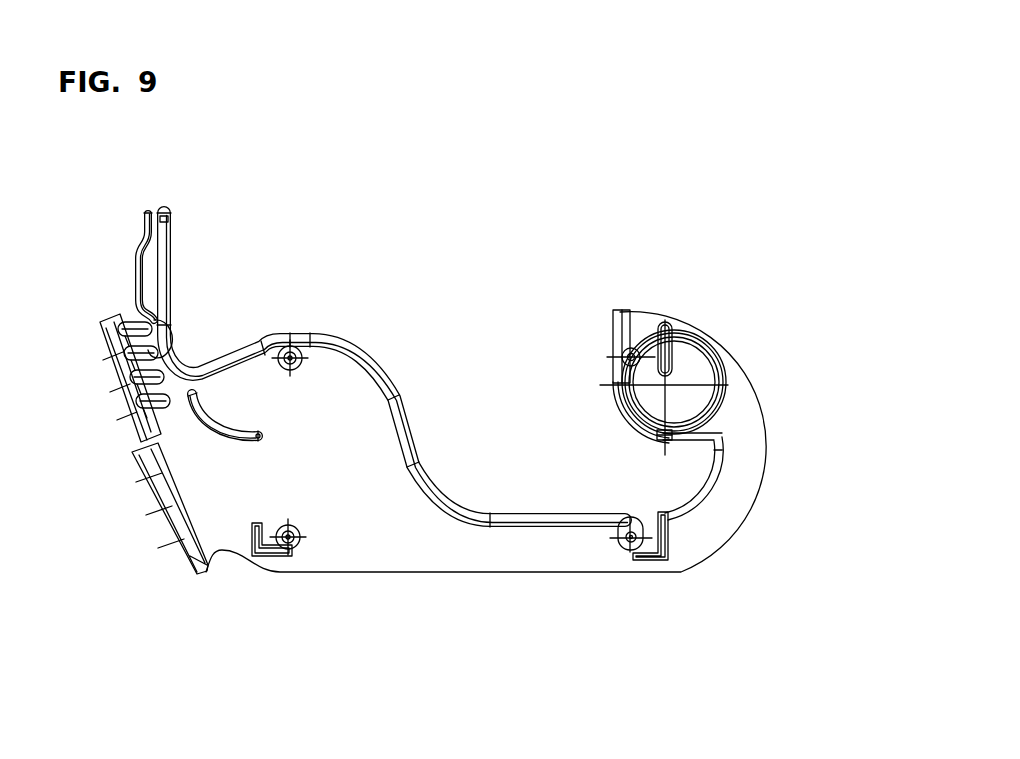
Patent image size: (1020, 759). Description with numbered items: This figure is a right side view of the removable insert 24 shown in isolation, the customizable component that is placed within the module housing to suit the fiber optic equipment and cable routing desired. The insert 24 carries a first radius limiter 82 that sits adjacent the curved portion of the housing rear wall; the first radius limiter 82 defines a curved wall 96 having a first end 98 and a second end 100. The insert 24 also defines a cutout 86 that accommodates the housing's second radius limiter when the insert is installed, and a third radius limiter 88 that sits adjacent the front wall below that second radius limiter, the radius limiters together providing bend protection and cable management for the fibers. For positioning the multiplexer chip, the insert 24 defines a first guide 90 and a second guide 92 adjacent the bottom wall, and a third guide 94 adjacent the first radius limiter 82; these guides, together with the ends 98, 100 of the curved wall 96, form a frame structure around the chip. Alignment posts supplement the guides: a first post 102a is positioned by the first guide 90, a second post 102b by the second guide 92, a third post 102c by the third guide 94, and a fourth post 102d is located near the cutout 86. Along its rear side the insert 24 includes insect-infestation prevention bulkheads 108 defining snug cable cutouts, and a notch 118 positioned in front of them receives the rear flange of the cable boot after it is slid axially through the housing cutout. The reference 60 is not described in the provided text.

The removable insert 24 is at (672, 628).
The mounting plate 60 is at (524, 442).
The first radius limiter 82 is at (690, 330).
The cutout 86 is at (189, 360).
The third radius limiter 88 is at (221, 438).
The first guide 90 is at (668, 540).
The second guide 92 is at (252, 540).
The third guide 94 is at (658, 340).
The curved wall 96 is at (723, 393).
The first end 98 is at (663, 434).
The second end 100 is at (632, 342).
The first post 102a is at (630, 537).
The second post 102b is at (295, 528).
The third post 102c is at (620, 362).
The fourth post 102d is at (293, 345).
The bulkheads 108 is at (137, 310).
The notch 118 is at (100, 348).